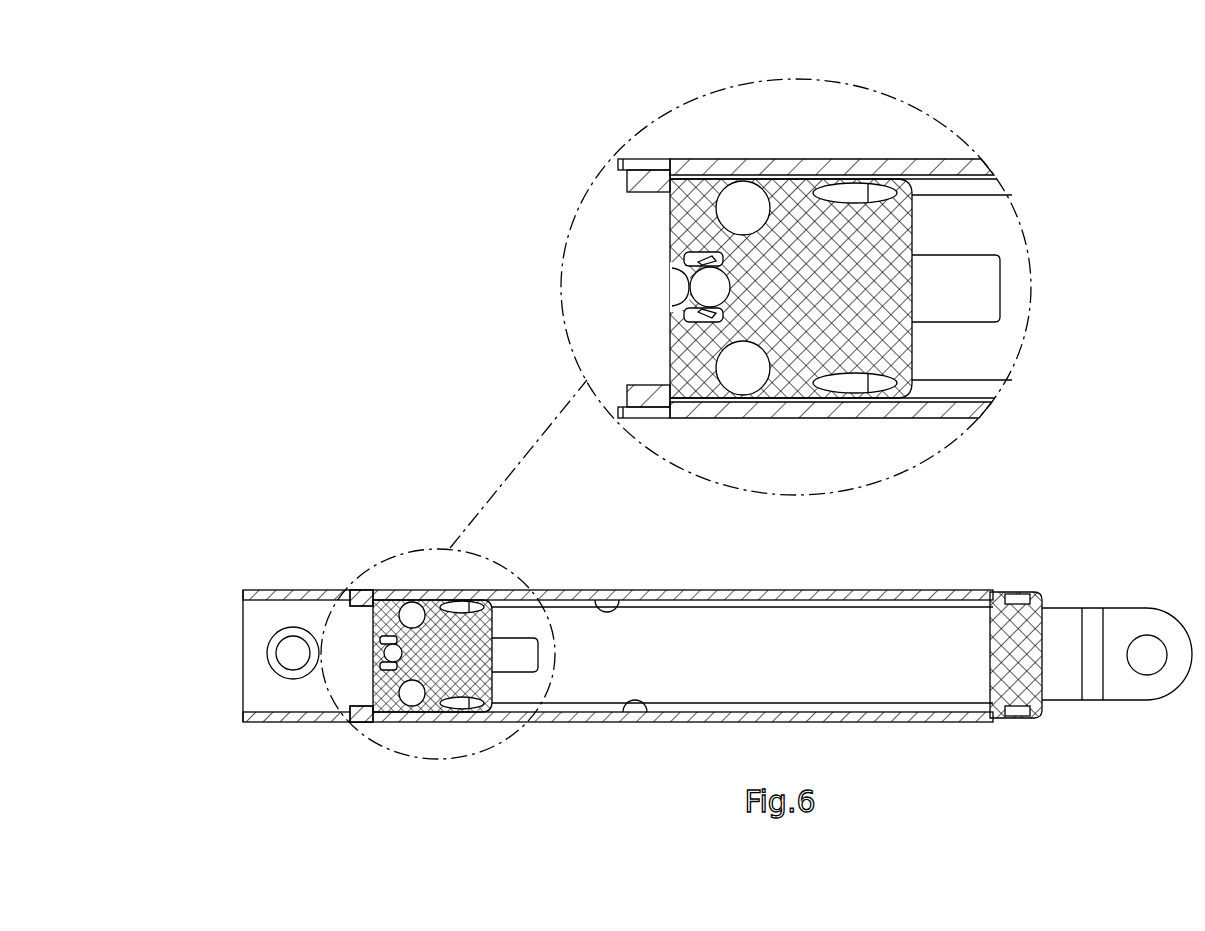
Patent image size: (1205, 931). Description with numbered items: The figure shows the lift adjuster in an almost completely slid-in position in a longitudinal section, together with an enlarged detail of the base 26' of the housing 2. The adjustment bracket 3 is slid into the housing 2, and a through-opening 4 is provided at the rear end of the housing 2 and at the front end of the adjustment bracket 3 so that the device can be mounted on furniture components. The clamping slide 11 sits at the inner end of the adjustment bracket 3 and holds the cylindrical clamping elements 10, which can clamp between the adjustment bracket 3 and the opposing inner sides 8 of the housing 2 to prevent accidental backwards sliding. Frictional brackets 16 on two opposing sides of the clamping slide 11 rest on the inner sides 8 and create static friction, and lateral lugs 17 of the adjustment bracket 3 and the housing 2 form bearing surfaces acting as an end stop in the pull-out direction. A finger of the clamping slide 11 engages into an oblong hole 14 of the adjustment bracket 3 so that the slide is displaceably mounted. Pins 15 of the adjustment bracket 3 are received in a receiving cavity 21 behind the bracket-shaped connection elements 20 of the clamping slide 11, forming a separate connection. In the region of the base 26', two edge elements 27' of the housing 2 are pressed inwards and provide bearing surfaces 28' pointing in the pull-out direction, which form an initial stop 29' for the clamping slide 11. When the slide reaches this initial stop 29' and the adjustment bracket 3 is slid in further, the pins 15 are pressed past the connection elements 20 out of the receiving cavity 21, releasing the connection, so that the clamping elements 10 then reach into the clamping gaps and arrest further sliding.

The housing 2 is at (950, 592).
The adjustment bracket 3 is at (1062, 623).
The through-opening 4 is at (290, 645).
The inner sides 8 is at (597, 600).
The clamping elements 10 is at (742, 200).
The clamping slide 11 is at (436, 600).
The oblong hole 14 is at (525, 657).
The pins 15 is at (383, 653).
The frictional brackets 16 is at (850, 186).
The lateral lugs 17 is at (878, 195).
The connection elements 20 is at (672, 280).
The receiving cavity 21 is at (673, 290).
The base 26' is at (216, 695).
The edge elements 27' is at (510, 410).
The bearing surfaces 28' is at (655, 290).
The initial stop 29' is at (589, 209).